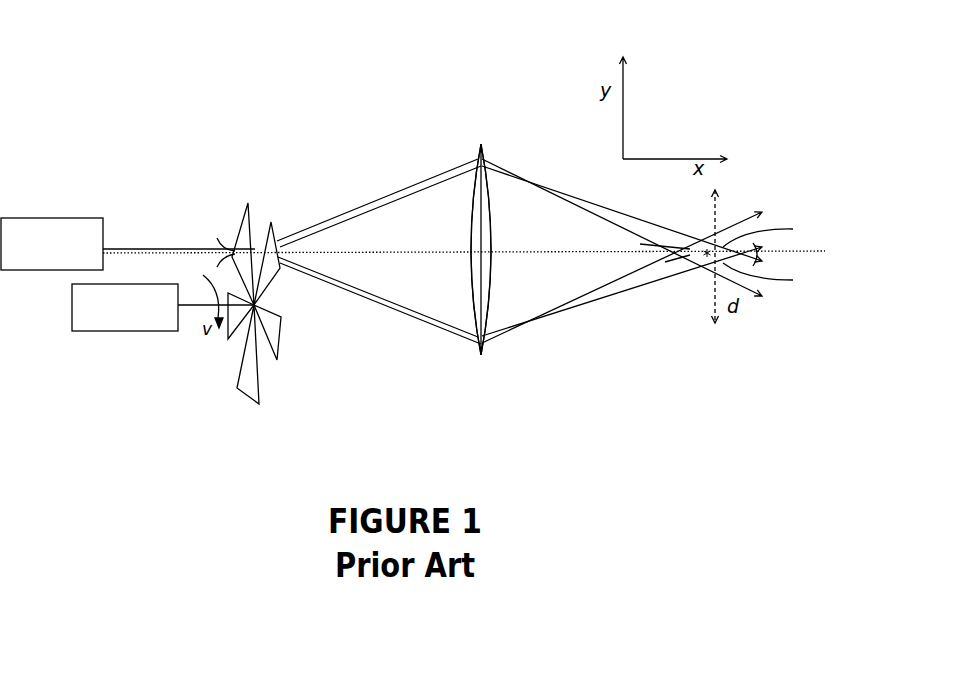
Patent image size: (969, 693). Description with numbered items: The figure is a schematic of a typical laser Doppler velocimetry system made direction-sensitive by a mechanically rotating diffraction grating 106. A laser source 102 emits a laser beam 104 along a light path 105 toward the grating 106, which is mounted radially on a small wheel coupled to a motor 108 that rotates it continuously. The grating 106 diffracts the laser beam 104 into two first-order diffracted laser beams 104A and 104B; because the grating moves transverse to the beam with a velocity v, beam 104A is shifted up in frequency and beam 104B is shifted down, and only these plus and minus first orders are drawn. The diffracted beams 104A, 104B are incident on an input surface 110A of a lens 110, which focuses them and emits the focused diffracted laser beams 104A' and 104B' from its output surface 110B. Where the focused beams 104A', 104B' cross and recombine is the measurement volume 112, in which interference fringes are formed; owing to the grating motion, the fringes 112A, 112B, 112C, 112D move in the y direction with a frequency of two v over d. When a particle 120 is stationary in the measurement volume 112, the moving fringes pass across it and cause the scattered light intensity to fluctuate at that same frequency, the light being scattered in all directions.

The laser source 102 is at (60, 217).
The laser beam 104 is at (148, 253).
The light path 105 is at (377, 252).
The mechanically rotating diffraction grating 106 is at (245, 217).
The motor 108 is at (128, 332).
The first order diffracted laser beam 104A is at (379, 194).
The first order diffracted laser beam 104B is at (379, 306).
The focused diffracted laser beam 104A' is at (622, 218).
The focused diffracted laser beam 104B' is at (622, 285).
The lens 110 is at (481, 357).
The input surface 110A is at (470, 262).
The output surface 110B is at (487, 260).
The measurement volume 112 is at (695, 247).
The fringe 112A is at (683, 247).
The fringe 112B is at (778, 233).
The fringe 112C is at (780, 276).
The fringe 112D is at (677, 262).
The particle 120 is at (706, 245).